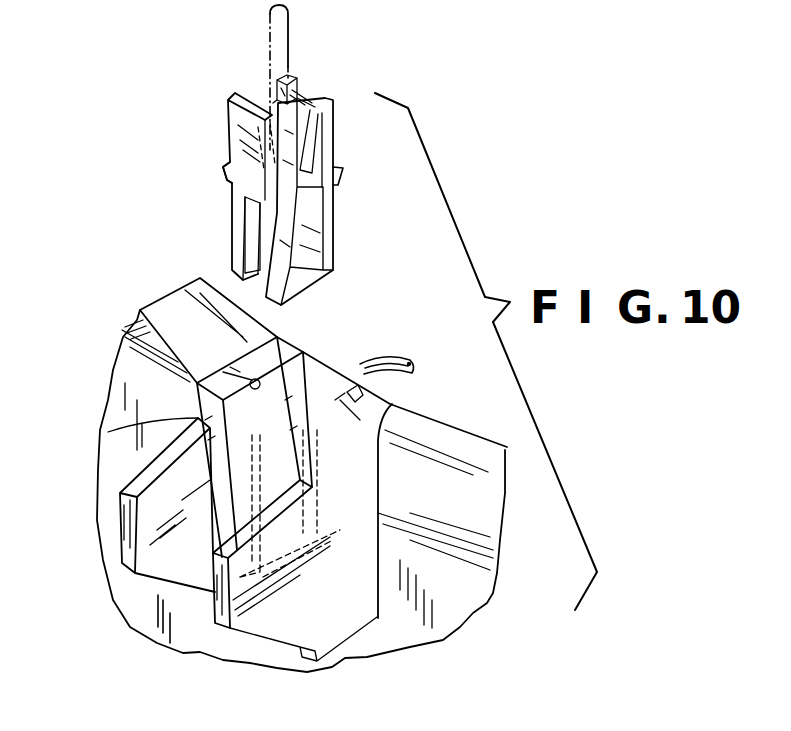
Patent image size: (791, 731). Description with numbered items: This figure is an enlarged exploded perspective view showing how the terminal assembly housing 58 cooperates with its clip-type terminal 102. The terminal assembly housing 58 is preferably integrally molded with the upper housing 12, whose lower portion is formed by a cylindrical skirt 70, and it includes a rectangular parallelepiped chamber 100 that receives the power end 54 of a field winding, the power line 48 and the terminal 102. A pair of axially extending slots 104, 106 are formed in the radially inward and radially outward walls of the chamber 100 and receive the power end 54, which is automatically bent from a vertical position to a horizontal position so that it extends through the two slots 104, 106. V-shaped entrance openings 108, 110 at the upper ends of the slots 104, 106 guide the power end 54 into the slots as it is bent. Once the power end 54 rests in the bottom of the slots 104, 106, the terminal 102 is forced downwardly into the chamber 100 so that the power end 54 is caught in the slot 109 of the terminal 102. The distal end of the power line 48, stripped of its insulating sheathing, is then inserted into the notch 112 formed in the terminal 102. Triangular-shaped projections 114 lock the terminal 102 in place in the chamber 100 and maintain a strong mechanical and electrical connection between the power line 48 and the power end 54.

The upper housing 12 is at (452, 605).
The power line 48 is at (268, 33).
The power end 54 is at (400, 346).
The terminal assembly housing 58 is at (130, 470).
The skirt 70 is at (150, 393).
The rectangular parallelepiped chamber 100 is at (148, 306).
The clip-type terminal 102 is at (267, 175).
The axially extending slot 104 is at (167, 505).
The axially extending slot 106 is at (332, 395).
The V-shaped entrance opening 108 is at (130, 424).
The slot 109 is at (262, 238).
The V-shaped entrance opening 110 is at (293, 392).
The notch 112 is at (300, 110).
The triangular-shaped projections 114 is at (229, 173).